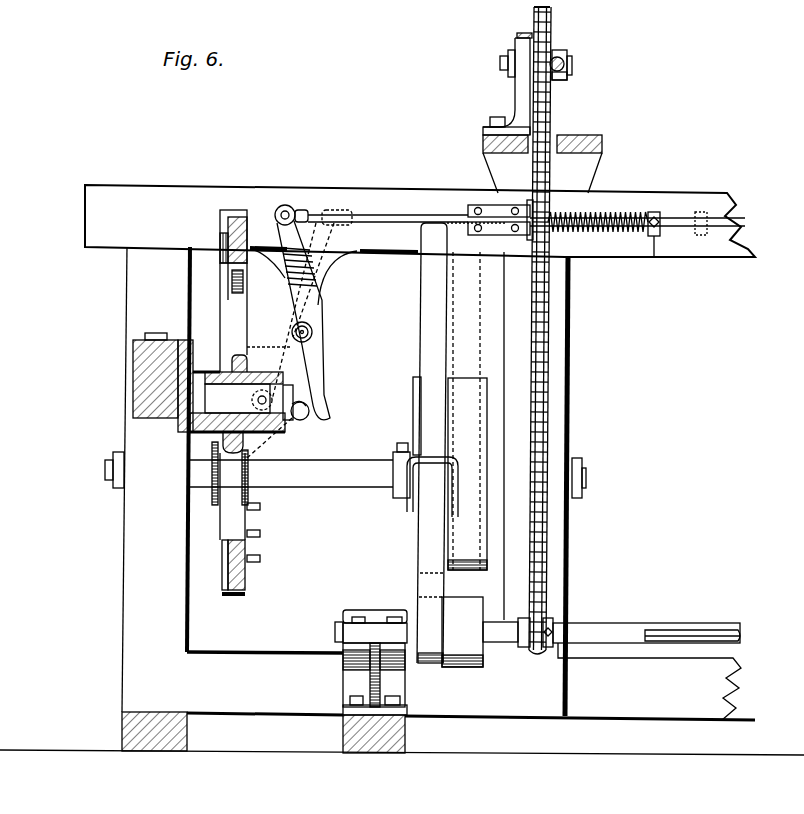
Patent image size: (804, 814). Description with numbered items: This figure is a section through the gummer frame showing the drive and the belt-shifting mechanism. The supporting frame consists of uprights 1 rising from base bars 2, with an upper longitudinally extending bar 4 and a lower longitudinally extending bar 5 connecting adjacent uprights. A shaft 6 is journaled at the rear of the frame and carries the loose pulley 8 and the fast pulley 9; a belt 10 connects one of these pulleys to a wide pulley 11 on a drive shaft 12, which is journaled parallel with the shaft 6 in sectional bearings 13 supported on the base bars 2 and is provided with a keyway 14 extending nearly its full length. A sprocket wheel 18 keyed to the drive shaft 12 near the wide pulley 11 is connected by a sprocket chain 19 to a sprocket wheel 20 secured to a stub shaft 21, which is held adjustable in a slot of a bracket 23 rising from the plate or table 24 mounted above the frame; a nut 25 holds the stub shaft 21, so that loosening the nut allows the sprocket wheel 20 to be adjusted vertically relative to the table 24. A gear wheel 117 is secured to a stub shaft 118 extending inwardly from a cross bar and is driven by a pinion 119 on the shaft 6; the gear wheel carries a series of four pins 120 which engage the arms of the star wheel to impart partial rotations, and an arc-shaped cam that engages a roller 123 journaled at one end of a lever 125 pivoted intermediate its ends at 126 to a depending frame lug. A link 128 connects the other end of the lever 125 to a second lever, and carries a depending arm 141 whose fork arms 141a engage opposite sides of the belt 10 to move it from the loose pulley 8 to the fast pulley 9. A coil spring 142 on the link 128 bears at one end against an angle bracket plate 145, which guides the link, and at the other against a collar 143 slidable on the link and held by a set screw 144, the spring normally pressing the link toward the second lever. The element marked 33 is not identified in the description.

The upright 1 is at (132, 558).
The base bar 2 is at (172, 751).
The upper longitudinally extending bar 4 is at (420, 245).
The lower longitudinally extending bar 5 is at (649, 681).
The shaft 6 is at (348, 483).
The loose pulley 8 is at (411, 398).
The fast pulley 9 is at (467, 474).
The belt 10 is at (434, 666).
The wide pulley 11 is at (457, 668).
The drive shaft 12 is at (620, 628).
The sectional bearing 13 is at (378, 607).
The keyway 14 is at (694, 633).
The sprocket wheel 18 is at (535, 656).
The sprocket chain 19 is at (545, 552).
The sprocket wheel 20 is at (550, 8).
The stub shaft 21 is at (573, 61).
The bracket 23 is at (516, 36).
The plate or table 24 is at (596, 135).
The nut 25 is at (507, 72).
The bearing 33 is at (566, 75).
The gear wheel 117 is at (232, 210).
The stub shaft 118 is at (254, 380).
The pinion 119 is at (212, 500).
The pins 120 is at (258, 511).
The roller 123 is at (294, 420).
The lever 125 is at (315, 367).
The pivot 126 is at (313, 330).
The link 128 is at (375, 214).
The depending arm 141 is at (424, 304).
The fork arms 141a is at (440, 510).
The coil spring 142 is at (602, 214).
The collar 143 is at (662, 214).
The set screw 144 is at (654, 256).
The angle bracket plate 145 is at (518, 212).